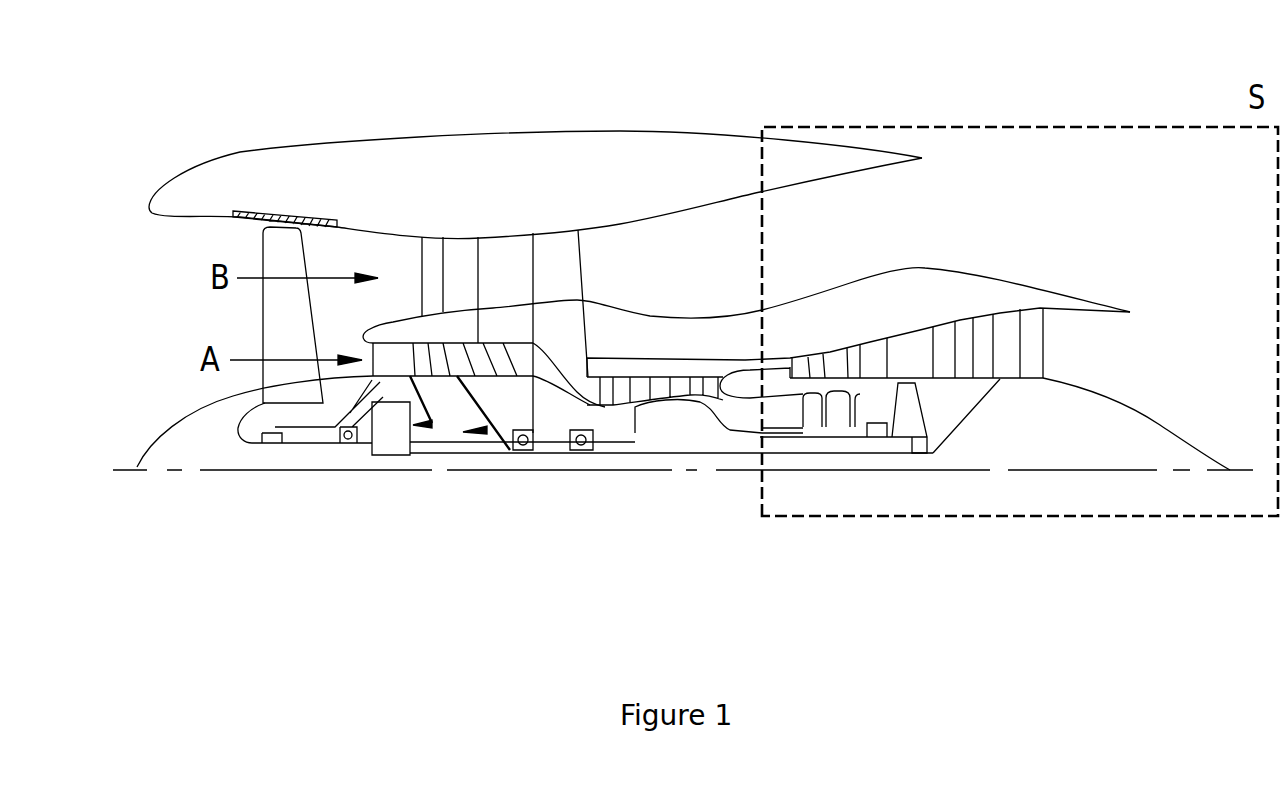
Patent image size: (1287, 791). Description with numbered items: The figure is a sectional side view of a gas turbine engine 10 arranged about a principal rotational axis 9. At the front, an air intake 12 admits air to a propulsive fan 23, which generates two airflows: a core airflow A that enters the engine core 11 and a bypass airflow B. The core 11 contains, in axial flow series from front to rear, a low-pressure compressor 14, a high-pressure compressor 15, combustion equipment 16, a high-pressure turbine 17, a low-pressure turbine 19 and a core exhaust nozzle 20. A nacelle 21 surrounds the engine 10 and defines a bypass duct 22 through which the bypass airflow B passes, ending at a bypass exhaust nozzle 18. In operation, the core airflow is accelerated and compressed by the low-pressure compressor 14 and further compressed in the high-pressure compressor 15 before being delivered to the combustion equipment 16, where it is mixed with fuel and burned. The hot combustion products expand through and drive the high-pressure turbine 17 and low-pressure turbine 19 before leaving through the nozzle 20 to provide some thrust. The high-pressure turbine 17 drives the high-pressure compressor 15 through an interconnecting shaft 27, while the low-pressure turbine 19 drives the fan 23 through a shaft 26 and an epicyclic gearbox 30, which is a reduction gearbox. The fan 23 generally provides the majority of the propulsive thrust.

The principal rotational axis 9 is at (997, 473).
The gas turbine engine 10 is at (237, 152).
The core 11 is at (690, 330).
The air intake 12 is at (154, 278).
The low-pressure compressor 14 is at (472, 237).
The high-pressure compressor 15 is at (660, 388).
The combustion equipment 16 is at (762, 462).
The high-pressure turbine 17 is at (837, 370).
The bypass exhaust nozzle 18 is at (995, 213).
The low-pressure turbine 19 is at (1002, 316).
The core exhaust nozzle 20 is at (1093, 358).
The nacelle 21 is at (563, 153).
The bypass duct 22 is at (889, 231).
The propulsive fan 23 is at (268, 318).
The shaft 26 is at (708, 433).
The interconnecting shaft 27 is at (708, 437).
The epicyclic gearbox 30 is at (392, 433).